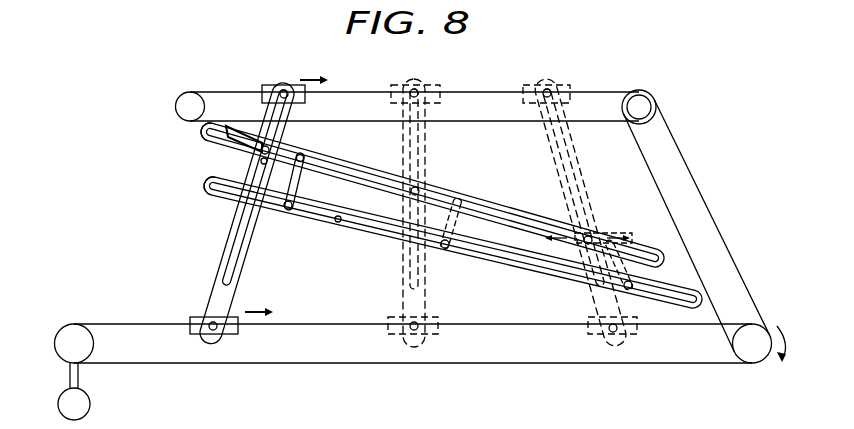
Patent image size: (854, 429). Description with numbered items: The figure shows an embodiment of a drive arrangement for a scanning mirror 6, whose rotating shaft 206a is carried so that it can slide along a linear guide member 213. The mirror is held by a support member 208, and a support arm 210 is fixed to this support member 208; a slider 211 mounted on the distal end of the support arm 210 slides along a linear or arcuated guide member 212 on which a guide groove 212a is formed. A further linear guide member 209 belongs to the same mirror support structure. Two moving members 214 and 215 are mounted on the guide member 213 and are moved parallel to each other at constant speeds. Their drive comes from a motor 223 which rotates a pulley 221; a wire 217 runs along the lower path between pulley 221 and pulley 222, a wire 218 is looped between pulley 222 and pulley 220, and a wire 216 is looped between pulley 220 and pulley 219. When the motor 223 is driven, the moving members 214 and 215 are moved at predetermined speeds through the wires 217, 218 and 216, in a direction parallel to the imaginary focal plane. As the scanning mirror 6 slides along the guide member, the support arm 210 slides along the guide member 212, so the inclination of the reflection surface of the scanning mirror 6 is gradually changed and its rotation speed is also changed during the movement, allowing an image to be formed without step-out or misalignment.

The scanning mirror 6 is at (247, 128).
The rotating shaft 206a is at (260, 155).
The support member 208 is at (295, 157).
The linear guide member 209 is at (205, 131).
The support arm 210 is at (303, 183).
The slider 211 is at (289, 210).
The guide member 212 is at (213, 190).
The guide groove 212a is at (338, 222).
The linear guide member 213 is at (222, 270).
The moving member 214 is at (270, 85).
The moving member 215 is at (198, 317).
The wire 216 is at (355, 92).
The wire 217 is at (312, 323).
The wire 218 is at (721, 225).
The pulley 219 is at (182, 97).
The pulley 220 is at (640, 100).
The pulley 221 is at (72, 337).
The pulley 222 is at (753, 332).
The motor 223 is at (90, 404).